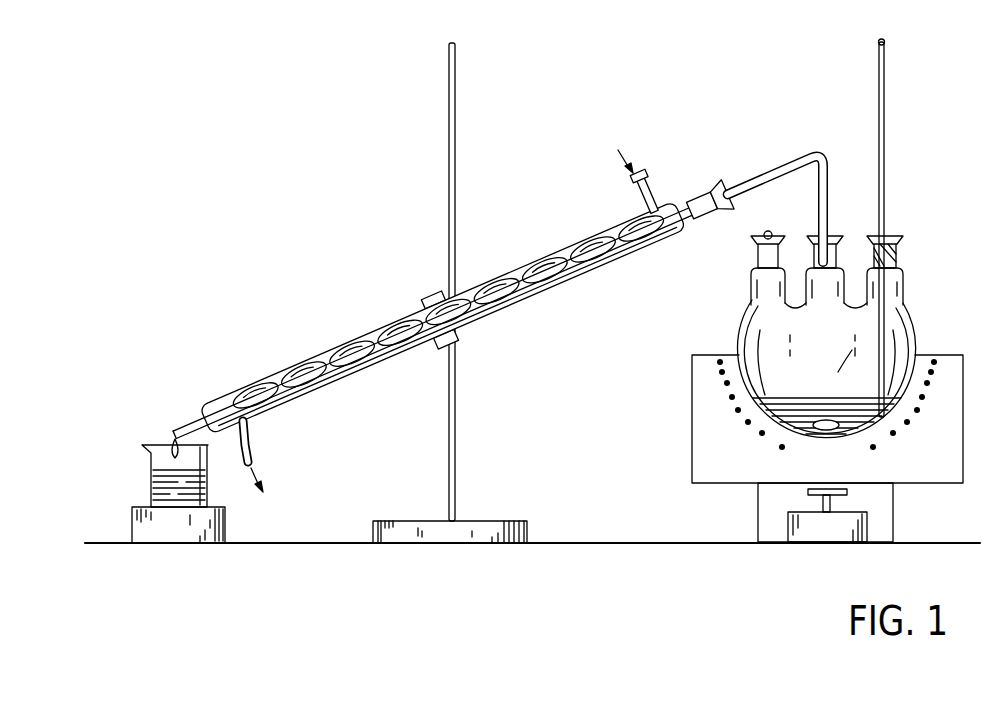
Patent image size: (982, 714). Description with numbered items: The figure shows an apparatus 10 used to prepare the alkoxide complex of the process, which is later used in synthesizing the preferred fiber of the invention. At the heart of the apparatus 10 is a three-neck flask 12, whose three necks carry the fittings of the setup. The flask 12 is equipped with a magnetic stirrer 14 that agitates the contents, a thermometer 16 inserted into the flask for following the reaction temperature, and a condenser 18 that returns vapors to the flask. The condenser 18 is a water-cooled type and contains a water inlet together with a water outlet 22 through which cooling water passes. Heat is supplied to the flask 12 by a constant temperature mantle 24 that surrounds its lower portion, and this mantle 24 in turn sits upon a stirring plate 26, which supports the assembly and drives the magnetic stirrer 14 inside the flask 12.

The apparatus 10 is at (533, 291).
The three-neck flask 12 is at (903, 291).
The magnetic stirrer 14 is at (833, 428).
The thermometer 16 is at (885, 134).
The condenser 18 is at (487, 301).
The water outlet 22 is at (259, 447).
The constant temperature mantle 24 is at (931, 373).
The stirring plate 26 is at (893, 515).